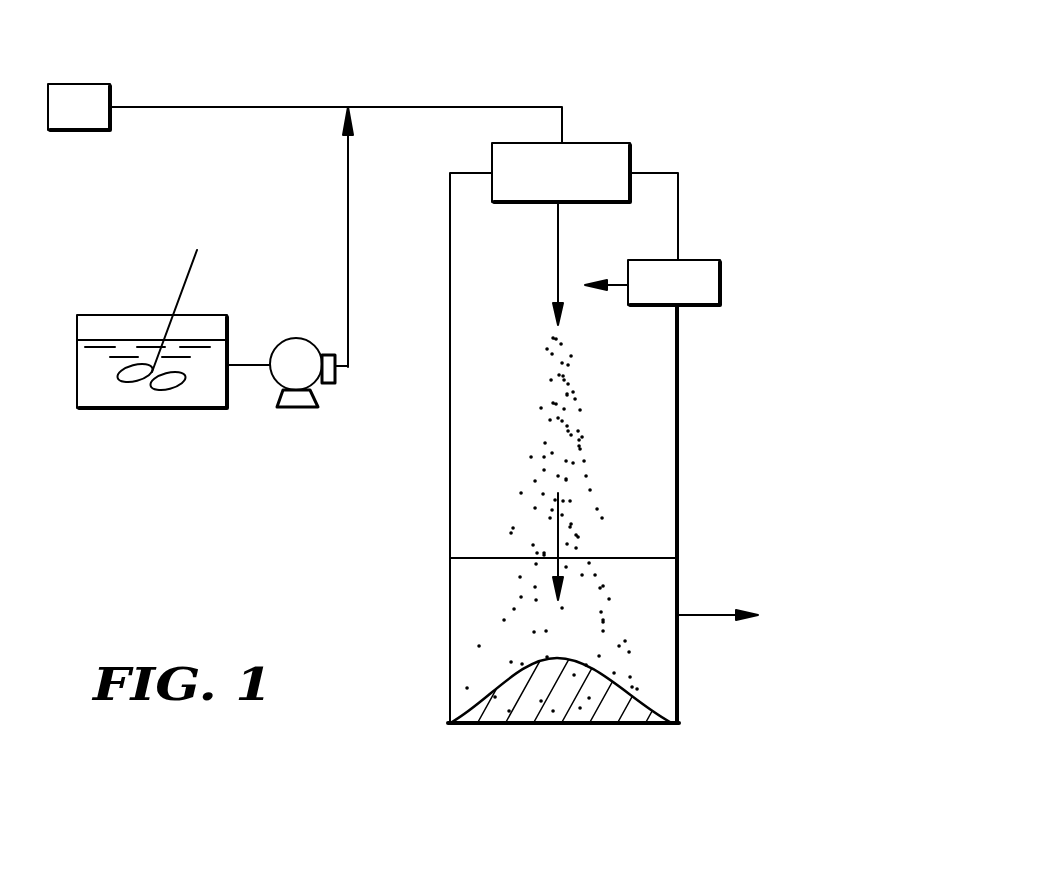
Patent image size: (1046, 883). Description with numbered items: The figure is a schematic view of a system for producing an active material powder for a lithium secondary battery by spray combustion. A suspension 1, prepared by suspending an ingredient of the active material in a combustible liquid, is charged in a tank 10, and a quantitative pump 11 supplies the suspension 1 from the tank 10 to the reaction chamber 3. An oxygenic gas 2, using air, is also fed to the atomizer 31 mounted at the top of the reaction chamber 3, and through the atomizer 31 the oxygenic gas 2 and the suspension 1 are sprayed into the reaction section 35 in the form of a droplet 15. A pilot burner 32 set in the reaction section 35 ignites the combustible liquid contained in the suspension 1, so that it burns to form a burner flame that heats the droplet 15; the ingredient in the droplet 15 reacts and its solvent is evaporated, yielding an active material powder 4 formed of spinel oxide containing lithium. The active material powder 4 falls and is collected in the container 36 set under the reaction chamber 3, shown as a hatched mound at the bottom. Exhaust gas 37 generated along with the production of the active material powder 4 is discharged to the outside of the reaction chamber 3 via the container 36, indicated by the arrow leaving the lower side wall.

The oxygenic gas 2 is at (73, 101).
The suspension 1 is at (110, 345).
The tank 10 is at (143, 410).
The quantitative pump 11 is at (277, 372).
The atomizer 31 is at (600, 153).
The reaction chamber 3 is at (678, 200).
The droplet 15 is at (558, 262).
The pilot burner 32 is at (707, 285).
The active material powder 4 is at (535, 417).
The reaction section 35 is at (640, 427).
The container 36 is at (507, 640).
The exhaust gas 37 is at (722, 620).